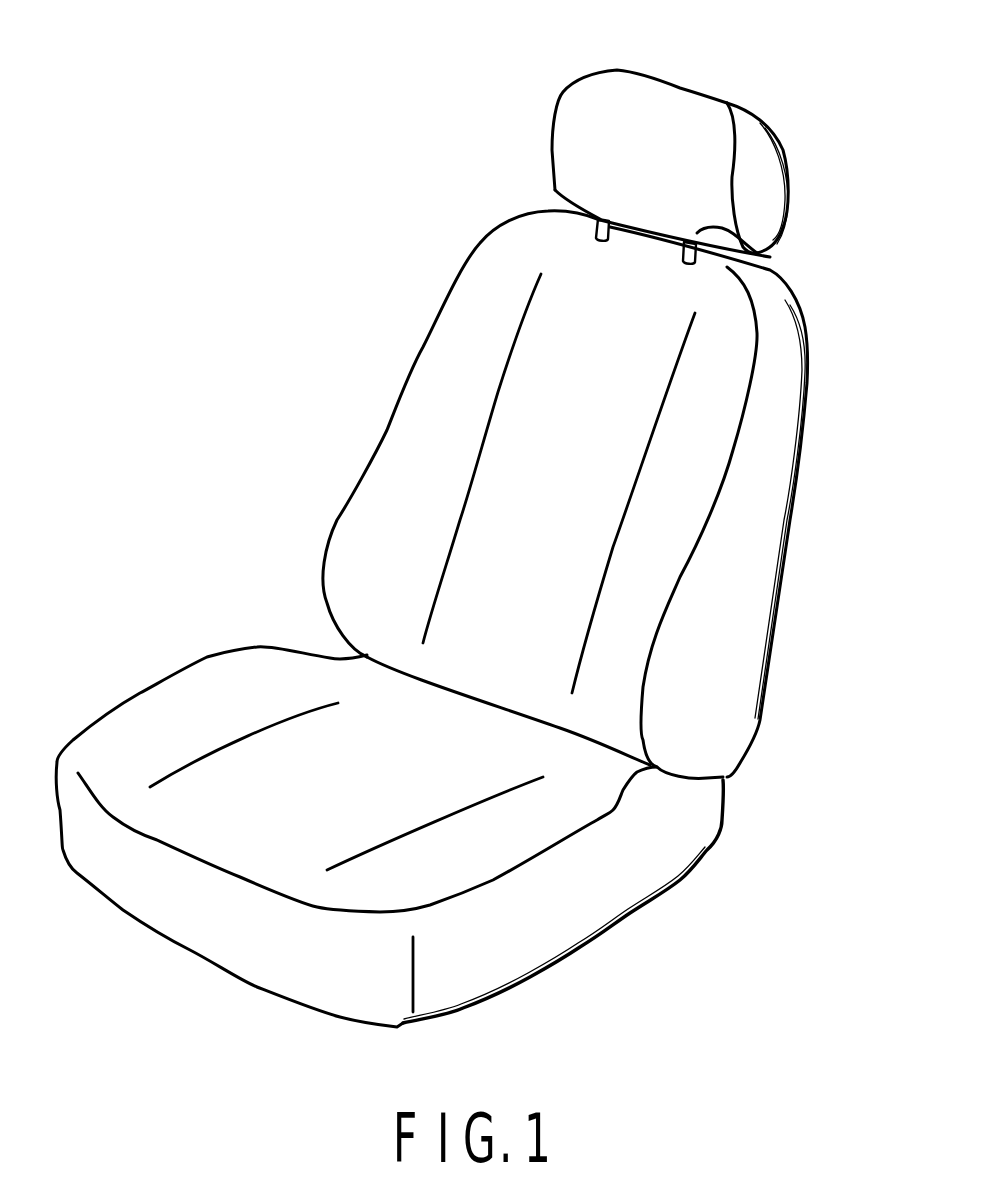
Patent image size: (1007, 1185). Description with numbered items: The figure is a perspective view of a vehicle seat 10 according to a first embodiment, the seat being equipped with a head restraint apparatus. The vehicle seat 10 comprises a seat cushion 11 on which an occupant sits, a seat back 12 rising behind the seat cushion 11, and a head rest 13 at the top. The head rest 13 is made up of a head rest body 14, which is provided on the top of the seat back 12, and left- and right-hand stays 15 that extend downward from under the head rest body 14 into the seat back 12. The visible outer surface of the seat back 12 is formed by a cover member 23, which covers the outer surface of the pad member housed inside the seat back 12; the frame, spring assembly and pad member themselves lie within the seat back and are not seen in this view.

The vehicle seat 10 is at (367, 189).
The seat cushion 11 is at (262, 762).
The seat back 12 is at (538, 445).
The head rest 13 is at (556, 96).
The head rest body 14 is at (677, 120).
The stays 15 is at (604, 215).
The cover member 23 is at (374, 528).